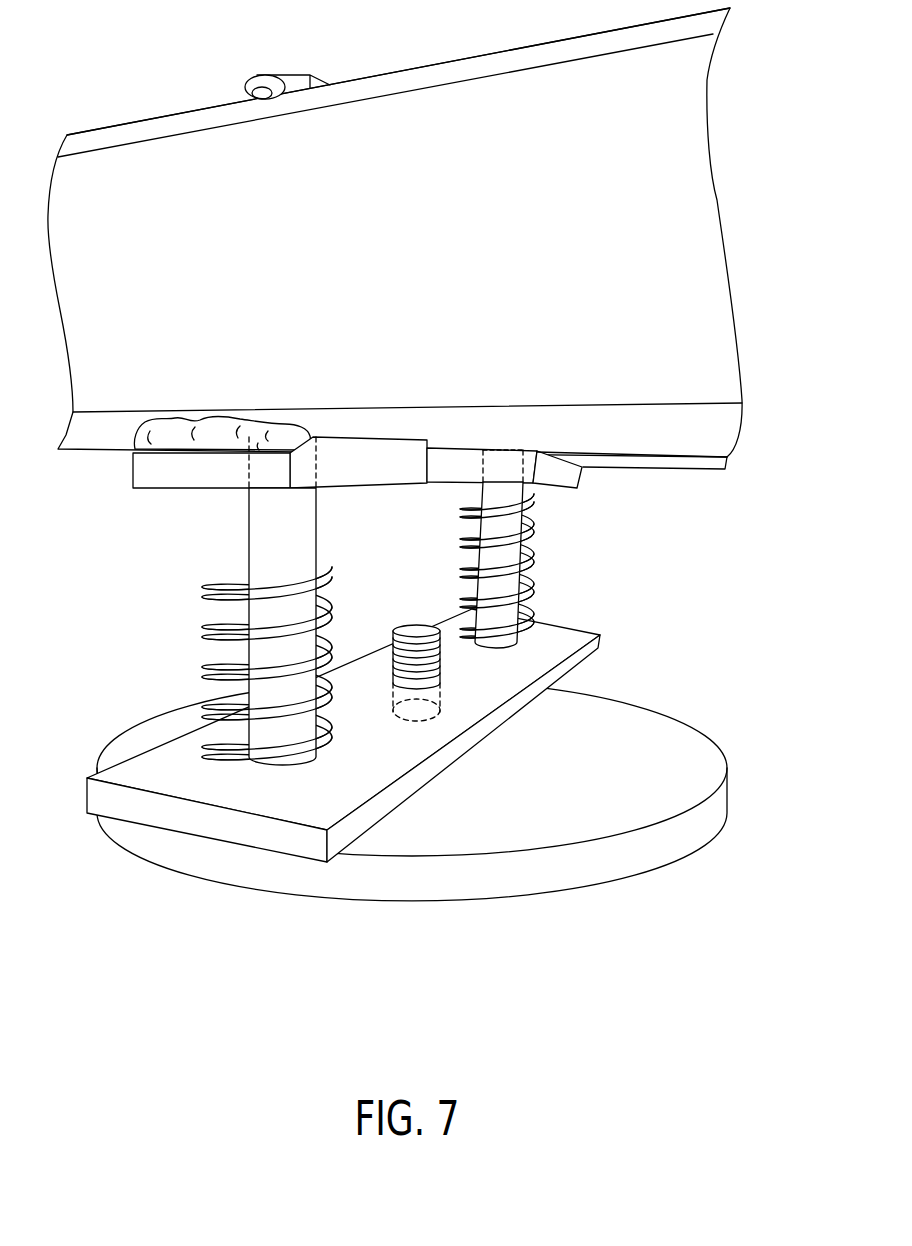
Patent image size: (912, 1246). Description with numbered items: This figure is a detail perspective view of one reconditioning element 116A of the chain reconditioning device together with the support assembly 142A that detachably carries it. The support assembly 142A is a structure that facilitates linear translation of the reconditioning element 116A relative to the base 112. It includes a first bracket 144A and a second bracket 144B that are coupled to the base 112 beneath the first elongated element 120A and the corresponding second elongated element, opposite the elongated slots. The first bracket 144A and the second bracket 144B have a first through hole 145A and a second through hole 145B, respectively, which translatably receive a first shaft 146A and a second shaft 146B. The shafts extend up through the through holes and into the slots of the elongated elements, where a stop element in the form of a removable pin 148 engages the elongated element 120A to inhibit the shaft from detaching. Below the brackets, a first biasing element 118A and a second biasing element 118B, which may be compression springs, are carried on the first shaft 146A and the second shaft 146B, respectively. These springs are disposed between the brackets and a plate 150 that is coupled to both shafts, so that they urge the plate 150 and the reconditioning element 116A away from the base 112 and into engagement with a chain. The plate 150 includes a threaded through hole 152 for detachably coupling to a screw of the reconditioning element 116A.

The base 112 is at (188, 112).
The first elongated element 120A is at (399, 78).
The removable pin 148 is at (250, 77).
The first through hole 145A is at (252, 473).
The second through hole 145B is at (483, 470).
The first bracket 144A is at (158, 488).
The second bracket 144B is at (562, 490).
The first shaft 146A is at (249, 540).
The second shaft 146B is at (478, 494).
The first biasing element 118A is at (200, 575).
The second biasing element 118B is at (462, 540).
The support assembly 142A is at (160, 607).
The plate 150 is at (137, 753).
The threaded through hole 152 is at (442, 692).
The reconditioning element 116A is at (620, 884).